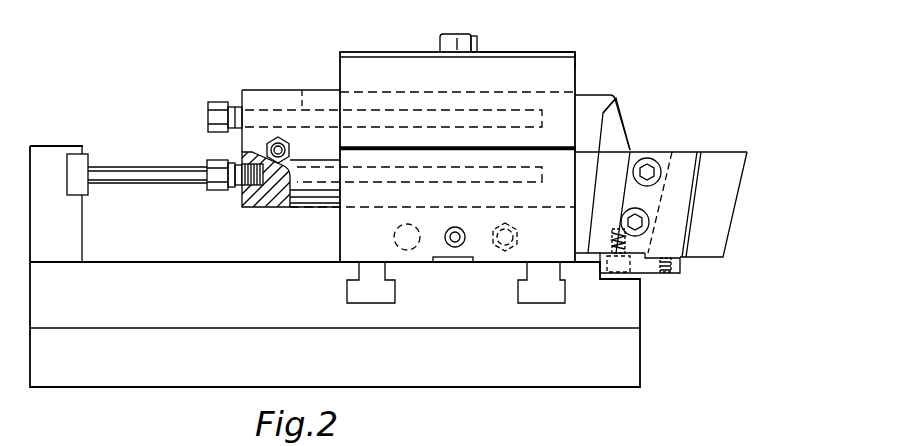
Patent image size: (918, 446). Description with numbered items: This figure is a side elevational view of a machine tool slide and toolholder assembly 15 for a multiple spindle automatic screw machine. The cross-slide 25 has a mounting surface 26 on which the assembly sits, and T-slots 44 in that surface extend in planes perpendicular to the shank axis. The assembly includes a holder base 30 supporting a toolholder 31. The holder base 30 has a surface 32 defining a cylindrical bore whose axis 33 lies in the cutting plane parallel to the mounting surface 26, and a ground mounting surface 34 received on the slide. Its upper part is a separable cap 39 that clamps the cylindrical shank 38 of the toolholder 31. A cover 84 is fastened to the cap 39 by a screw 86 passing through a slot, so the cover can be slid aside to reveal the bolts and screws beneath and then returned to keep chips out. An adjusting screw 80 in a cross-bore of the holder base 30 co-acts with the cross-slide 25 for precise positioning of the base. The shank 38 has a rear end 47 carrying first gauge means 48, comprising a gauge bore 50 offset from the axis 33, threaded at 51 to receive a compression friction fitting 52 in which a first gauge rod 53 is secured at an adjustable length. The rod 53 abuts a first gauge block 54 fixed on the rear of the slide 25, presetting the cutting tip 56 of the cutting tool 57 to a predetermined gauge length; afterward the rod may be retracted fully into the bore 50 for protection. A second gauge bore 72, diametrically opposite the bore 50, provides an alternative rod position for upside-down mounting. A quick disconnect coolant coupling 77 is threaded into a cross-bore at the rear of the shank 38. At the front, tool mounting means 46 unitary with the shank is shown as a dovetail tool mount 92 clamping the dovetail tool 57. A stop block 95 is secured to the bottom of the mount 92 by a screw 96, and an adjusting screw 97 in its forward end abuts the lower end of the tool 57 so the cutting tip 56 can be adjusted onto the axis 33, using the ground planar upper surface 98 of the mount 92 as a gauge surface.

The toolholder assembly 15 is at (604, 113).
The cross-slide 25 is at (640, 366).
The mounting surface 26 is at (138, 262).
The holder base 30 is at (350, 242).
The toolholder 31 is at (590, 95).
The surface defining cylindrical bore 32 is at (377, 209).
The axis 33 is at (410, 148).
The mounting surface 34 is at (415, 265).
The cylindrical shank 38 is at (278, 103).
The cap 39 is at (568, 68).
The T-slots 44 is at (550, 298).
The tool mounting means 46 is at (625, 155).
The rear end 47 is at (258, 90).
The first gauge means 48 is at (210, 160).
The gauge bore 50 is at (272, 200).
The threaded outer end 51 is at (256, 190).
The compression friction fitting 52 is at (215, 192).
The first gauge rod 53 is at (118, 167).
The first gauge block 54 is at (82, 152).
The cutting tip 56 is at (747, 152).
The cutting tool 57 is at (727, 218).
The second gauge bore 72 is at (303, 90).
The quick disconnect coolant coupling 77 is at (290, 150).
The adjusting screw 80 is at (458, 235).
The cover 84 is at (535, 52).
The screw 86 is at (478, 36).
The dovetail tool mount 92 is at (697, 152).
The stop block 95 is at (655, 275).
The screw 96 is at (618, 278).
The adjusting screw 97 is at (675, 275).
The upper surface 98 is at (672, 150).